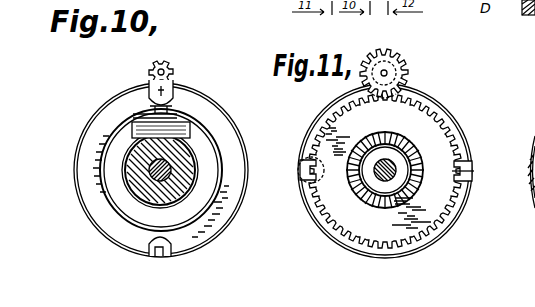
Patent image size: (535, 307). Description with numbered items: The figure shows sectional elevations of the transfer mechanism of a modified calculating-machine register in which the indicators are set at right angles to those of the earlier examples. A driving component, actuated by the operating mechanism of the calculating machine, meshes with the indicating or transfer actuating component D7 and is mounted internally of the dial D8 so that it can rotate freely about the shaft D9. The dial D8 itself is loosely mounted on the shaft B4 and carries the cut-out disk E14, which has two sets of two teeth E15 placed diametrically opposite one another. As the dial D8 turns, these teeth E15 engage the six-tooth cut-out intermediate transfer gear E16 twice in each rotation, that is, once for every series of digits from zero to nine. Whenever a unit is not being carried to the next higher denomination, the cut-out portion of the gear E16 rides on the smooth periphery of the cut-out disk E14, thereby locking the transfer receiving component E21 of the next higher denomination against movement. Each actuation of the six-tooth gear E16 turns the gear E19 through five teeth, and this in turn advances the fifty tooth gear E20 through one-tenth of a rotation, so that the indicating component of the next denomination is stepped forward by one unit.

In FIG. 10, the shaft D9 is at (176, 104).
In FIG. 10, the dial D8 is at (218, 234).
In FIG. 10, the indicating or transfer actuating component D7 is at (191, 130).
In FIG. 10, the cut-out disk E14 is at (232, 142).
In FIG. 11, the cut-out disk E14 is at (355, 246).
In FIG. 10, the shaft B4 is at (162, 171).
In FIG. 11, the shaft B4 is at (390, 160).
In FIG. 10, the six-tooth cut-out intermediate transfer gear E16 is at (172, 66).
In FIG. 11, the six-tooth cut-out intermediate transfer gear E16 is at (400, 56).
In FIG. 10, the teeth E15 is at (173, 78).
In FIG. 11, the teeth E15 is at (304, 194).
In FIG. 11, the gear E19 is at (398, 64).
In FIG. 11, the fifty tooth gear E20 is at (453, 229).
In FIG. 11, the transfer receiving component E21 is at (392, 210).